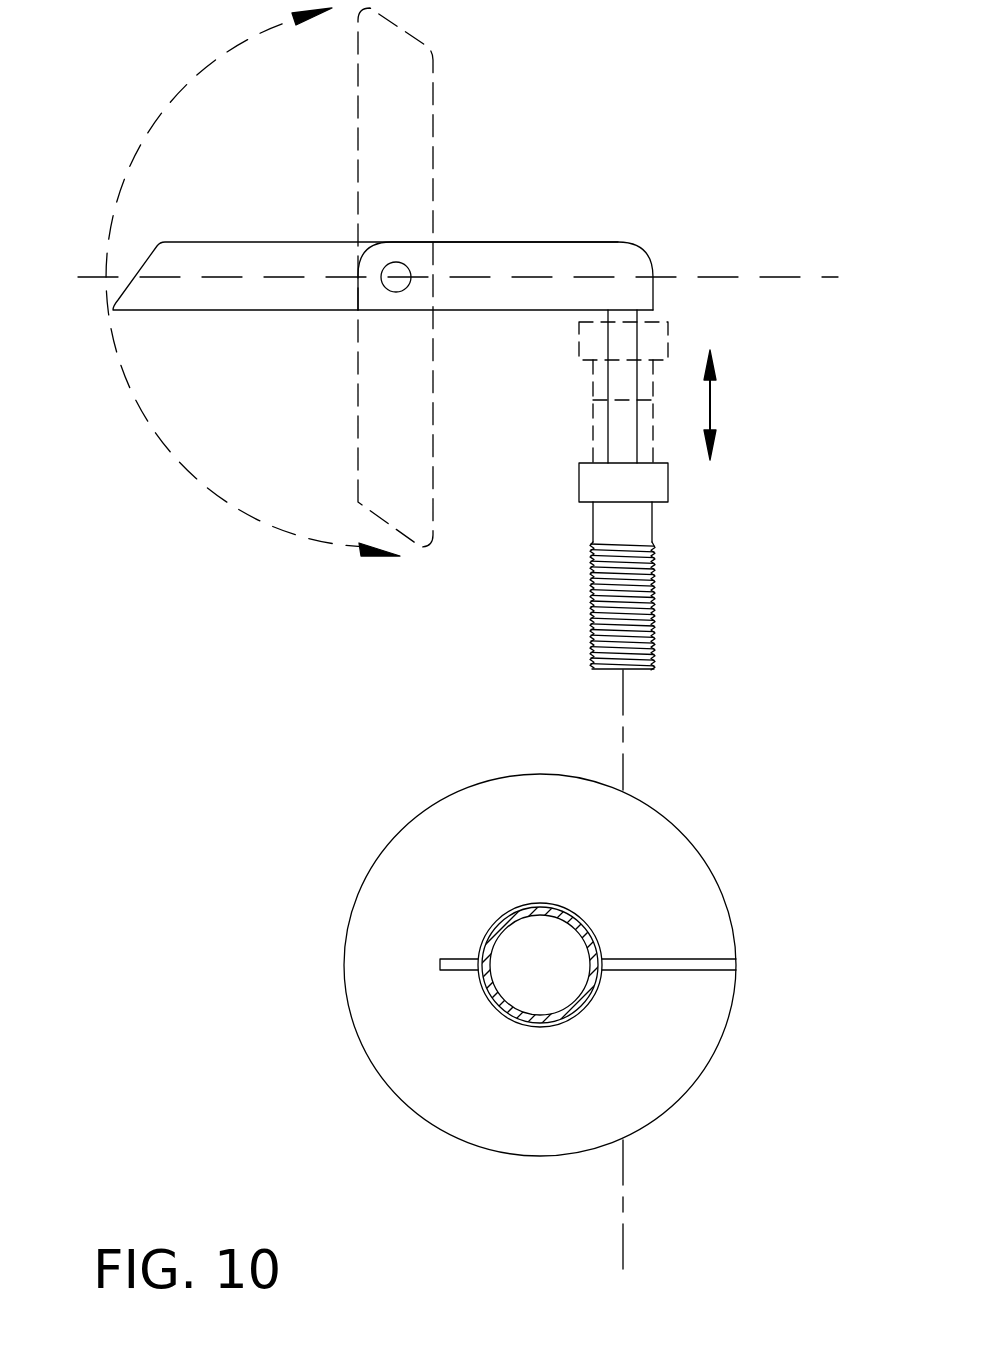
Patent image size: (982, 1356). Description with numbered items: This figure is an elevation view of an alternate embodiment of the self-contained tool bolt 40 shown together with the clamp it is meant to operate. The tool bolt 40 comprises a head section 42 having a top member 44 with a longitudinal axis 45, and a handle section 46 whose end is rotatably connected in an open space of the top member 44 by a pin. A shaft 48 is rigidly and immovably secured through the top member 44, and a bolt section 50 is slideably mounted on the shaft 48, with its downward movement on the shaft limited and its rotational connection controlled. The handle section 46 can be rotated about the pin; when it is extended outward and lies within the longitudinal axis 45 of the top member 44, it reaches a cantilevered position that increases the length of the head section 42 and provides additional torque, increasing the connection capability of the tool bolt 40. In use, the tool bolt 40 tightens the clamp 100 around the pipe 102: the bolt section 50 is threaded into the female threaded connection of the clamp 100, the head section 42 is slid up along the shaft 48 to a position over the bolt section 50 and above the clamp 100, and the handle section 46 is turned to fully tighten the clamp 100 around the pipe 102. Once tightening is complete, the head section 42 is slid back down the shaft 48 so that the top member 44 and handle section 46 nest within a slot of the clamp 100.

The tool bolt 40 is at (512, 203).
The head section 42 is at (373, 303).
The top member 44 is at (460, 293).
The longitudinal axis 45 is at (752, 277).
The handle section 46 is at (288, 260).
The shaft 48 is at (625, 427).
The bolt section 50 is at (668, 500).
The clamp 100 is at (395, 930).
The pipe 102 is at (533, 1020).